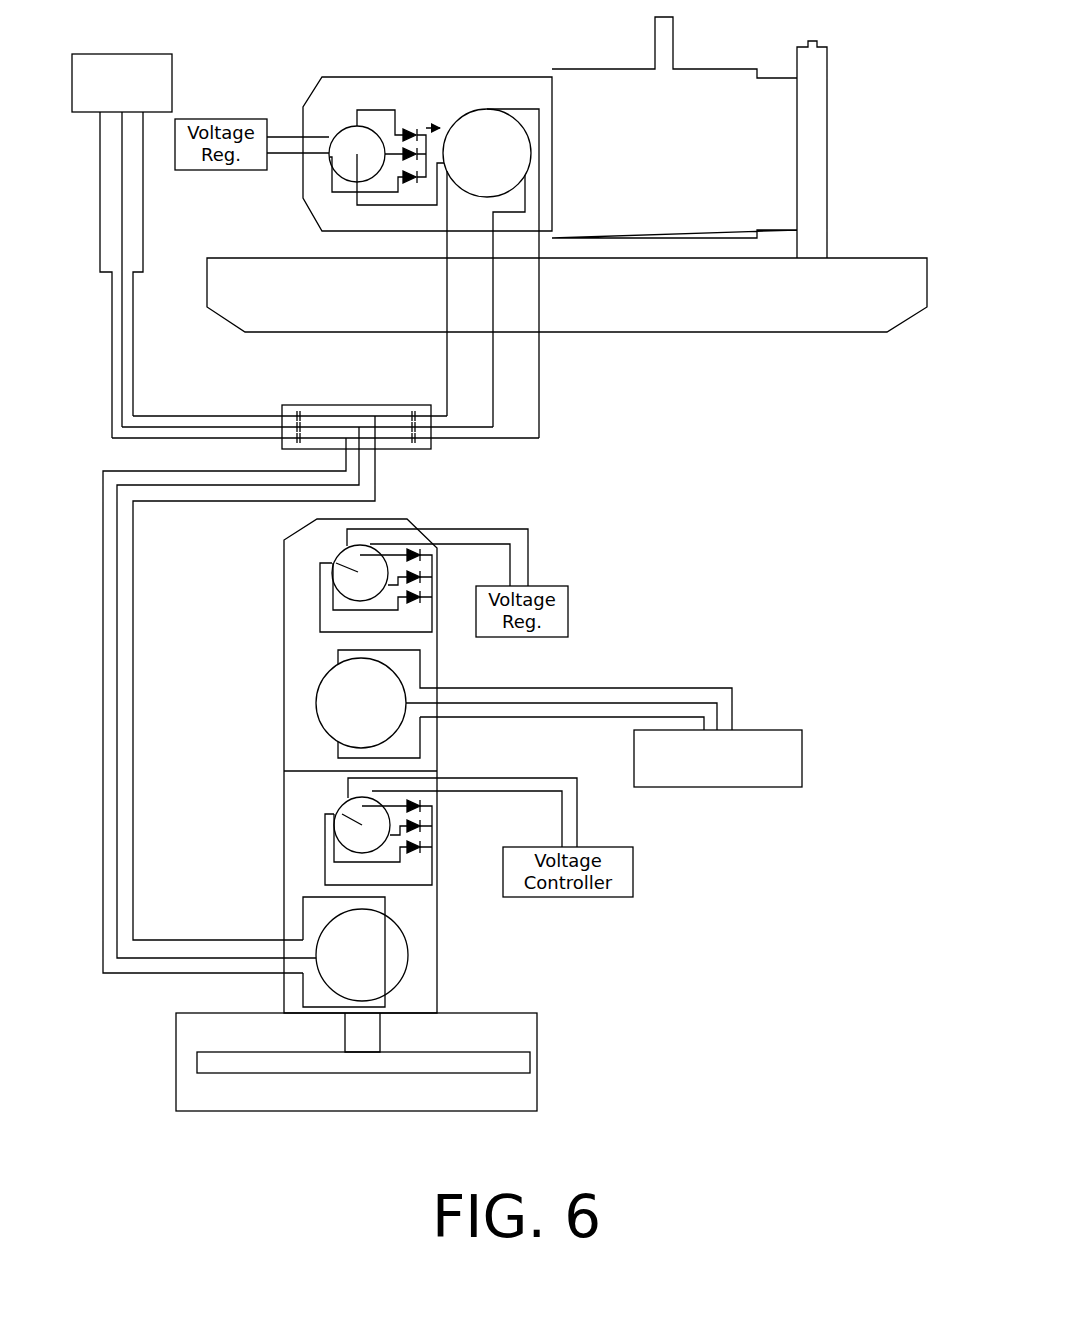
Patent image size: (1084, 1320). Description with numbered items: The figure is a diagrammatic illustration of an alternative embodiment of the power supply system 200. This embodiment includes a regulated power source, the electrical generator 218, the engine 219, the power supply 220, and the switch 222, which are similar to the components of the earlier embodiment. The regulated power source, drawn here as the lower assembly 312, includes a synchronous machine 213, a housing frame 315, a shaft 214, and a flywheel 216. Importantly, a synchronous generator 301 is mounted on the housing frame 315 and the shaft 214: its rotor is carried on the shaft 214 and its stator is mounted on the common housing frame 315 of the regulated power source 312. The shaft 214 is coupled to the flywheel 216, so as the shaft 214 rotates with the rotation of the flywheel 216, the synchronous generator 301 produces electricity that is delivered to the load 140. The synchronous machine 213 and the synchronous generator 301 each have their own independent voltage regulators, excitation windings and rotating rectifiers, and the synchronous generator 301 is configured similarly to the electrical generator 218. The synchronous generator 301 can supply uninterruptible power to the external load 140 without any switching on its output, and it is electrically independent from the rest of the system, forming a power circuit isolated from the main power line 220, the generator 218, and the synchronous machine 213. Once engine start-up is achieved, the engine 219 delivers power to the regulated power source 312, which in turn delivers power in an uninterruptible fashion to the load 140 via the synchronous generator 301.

The power supply 220 is at (122, 54).
The electrical generator 218 is at (448, 70).
The engine 219 is at (700, 58).
The switch 222 is at (355, 403).
The power supply system 200 is at (676, 461).
The motor generator housing 312 is at (695, 658).
The synchronous generator 301 is at (440, 665).
The load 140 is at (751, 787).
The housing frame 315 is at (438, 893).
The synchronous machine 213 is at (459, 943).
The shaft 214 is at (341, 1032).
The flywheel 216 is at (534, 1055).